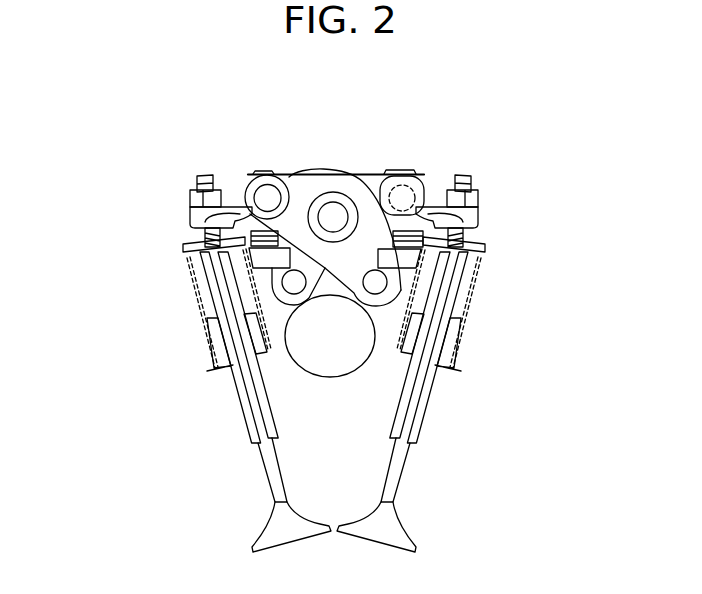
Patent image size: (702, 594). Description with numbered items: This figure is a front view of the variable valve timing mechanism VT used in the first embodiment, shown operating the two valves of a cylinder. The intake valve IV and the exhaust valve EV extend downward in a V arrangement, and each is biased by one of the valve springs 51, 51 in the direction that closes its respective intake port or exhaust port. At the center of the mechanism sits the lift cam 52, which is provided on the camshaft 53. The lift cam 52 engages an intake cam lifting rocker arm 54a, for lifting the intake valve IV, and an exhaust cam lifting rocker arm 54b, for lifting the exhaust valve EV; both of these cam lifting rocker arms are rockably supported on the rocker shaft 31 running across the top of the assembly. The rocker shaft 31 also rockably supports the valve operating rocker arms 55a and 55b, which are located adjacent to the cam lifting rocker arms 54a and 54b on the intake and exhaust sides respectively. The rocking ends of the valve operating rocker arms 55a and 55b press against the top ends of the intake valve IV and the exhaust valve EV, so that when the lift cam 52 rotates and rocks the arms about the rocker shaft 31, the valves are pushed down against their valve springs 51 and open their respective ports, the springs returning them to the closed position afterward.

The variable valve timing mechanism VT is at (356, 161).
The rocker shaft 31 is at (305, 184).
The intake cam lifting rocker arm 54a is at (422, 186).
The exhaust cam lifting rocker arm 54b is at (285, 175).
The valve operating rocker arm 55a is at (480, 223).
The valve operating rocker arm 55b is at (190, 222).
The valve spring 51 is at (205, 322).
The lift cam 52 is at (312, 381).
The camshaft 53 is at (330, 336).
The exhaust valve EV is at (268, 477).
The intake valve IV is at (420, 487).